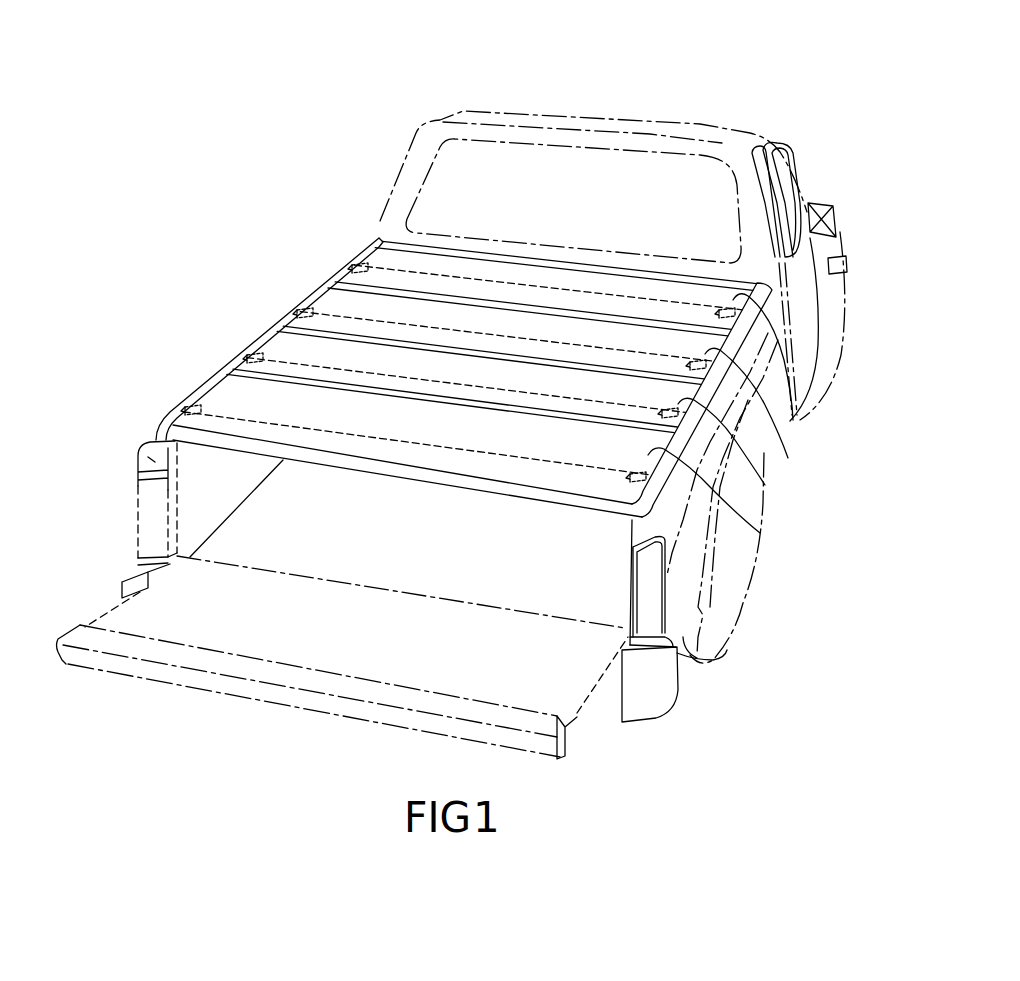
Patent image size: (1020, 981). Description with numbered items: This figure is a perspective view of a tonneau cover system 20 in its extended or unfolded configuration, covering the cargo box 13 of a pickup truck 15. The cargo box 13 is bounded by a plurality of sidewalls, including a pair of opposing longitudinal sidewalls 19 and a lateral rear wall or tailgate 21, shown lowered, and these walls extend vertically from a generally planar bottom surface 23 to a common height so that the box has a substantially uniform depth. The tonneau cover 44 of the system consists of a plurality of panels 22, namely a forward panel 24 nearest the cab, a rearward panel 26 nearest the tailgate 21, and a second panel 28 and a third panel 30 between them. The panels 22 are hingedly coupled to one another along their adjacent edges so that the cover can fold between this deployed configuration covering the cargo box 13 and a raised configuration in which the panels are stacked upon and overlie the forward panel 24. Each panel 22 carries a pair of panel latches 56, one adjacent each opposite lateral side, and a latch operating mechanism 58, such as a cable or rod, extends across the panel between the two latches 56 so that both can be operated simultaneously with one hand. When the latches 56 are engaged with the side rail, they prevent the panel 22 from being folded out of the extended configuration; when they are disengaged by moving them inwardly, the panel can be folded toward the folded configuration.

The cargo box 13 is at (406, 575).
The pickup truck 15 is at (637, 90).
The longitudinal sidewalls 19 is at (142, 449).
The tonneau cover system 20 is at (425, 334).
The tailgate 21 is at (542, 698).
The panels 22 is at (348, 237).
The bottom surface 23 is at (455, 540).
The forward panel 24 is at (793, 420).
The rearward panel 26 is at (760, 533).
The second panel 28 is at (765, 485).
The third panel 30 is at (788, 458).
The tonneau cover 44 is at (135, 405).
The panel latches 56 is at (634, 474).
The latch operating mechanism 58 is at (548, 290).